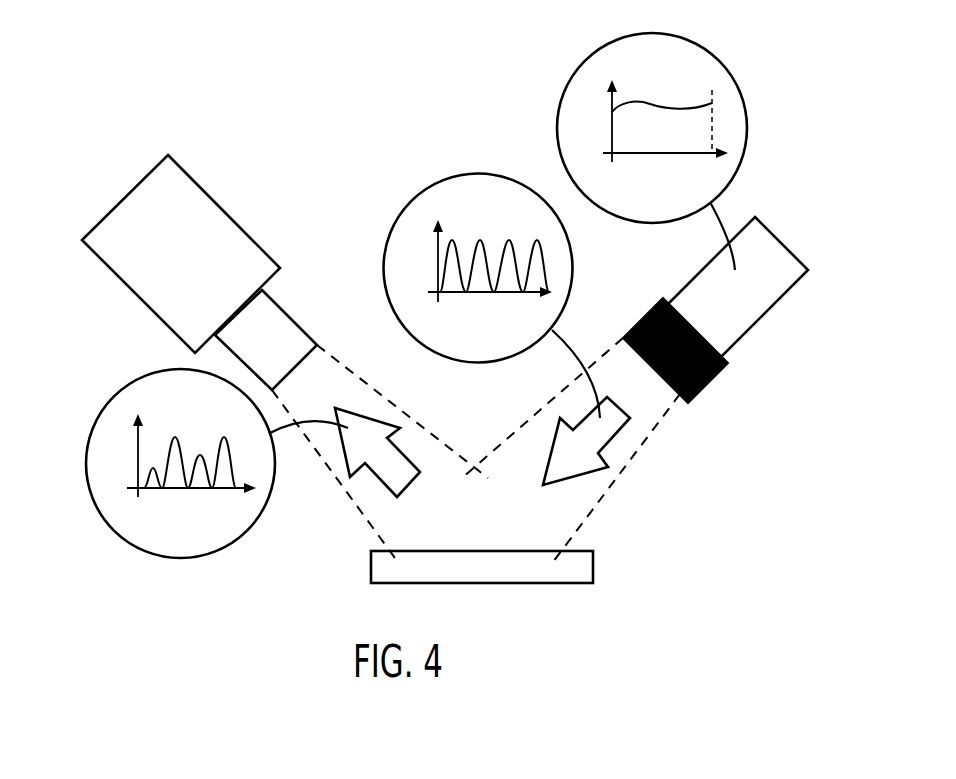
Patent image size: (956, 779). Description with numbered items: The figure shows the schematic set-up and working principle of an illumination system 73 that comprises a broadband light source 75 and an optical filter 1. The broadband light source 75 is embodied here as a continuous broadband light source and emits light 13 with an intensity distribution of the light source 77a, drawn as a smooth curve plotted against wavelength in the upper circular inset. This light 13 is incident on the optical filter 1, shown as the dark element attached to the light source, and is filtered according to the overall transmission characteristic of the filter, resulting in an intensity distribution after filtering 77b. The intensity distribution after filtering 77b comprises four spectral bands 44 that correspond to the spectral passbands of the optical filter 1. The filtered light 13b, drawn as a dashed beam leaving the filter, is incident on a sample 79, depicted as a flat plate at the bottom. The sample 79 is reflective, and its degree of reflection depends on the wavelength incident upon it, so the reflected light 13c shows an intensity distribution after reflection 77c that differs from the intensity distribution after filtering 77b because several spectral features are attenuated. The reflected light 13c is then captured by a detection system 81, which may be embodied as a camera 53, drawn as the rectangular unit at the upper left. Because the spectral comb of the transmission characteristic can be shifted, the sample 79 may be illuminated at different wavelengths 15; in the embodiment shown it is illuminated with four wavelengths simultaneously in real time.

The optical filter 1 is at (645, 328).
The light 13 is at (761, 314).
The filtered light 13b is at (637, 439).
The reflected light 13c is at (371, 514).
The wavelengths 15 is at (177, 490).
The spectral bands 44 is at (536, 240).
The camera 53 is at (216, 212).
The illumination system 73 is at (770, 377).
The broadband light source 75 is at (755, 287).
The intensity distribution of the light source 77a is at (612, 122).
The intensity distribution after filtering 77b is at (478, 268).
The intensity distribution after reflection 77c is at (138, 456).
The sample 79 is at (595, 568).
The detection system 81 is at (199, 270).